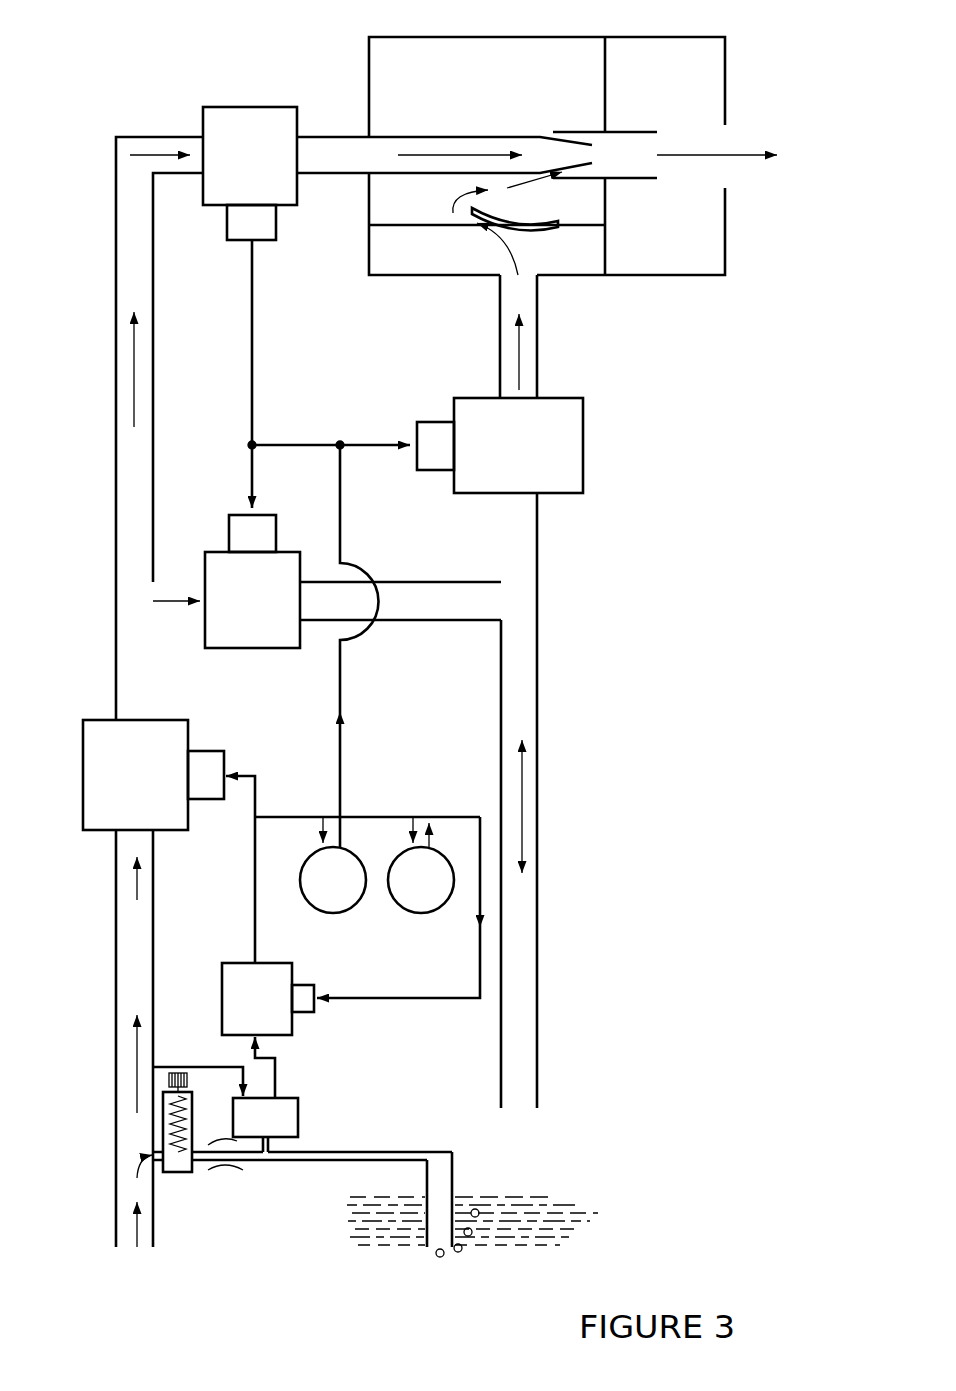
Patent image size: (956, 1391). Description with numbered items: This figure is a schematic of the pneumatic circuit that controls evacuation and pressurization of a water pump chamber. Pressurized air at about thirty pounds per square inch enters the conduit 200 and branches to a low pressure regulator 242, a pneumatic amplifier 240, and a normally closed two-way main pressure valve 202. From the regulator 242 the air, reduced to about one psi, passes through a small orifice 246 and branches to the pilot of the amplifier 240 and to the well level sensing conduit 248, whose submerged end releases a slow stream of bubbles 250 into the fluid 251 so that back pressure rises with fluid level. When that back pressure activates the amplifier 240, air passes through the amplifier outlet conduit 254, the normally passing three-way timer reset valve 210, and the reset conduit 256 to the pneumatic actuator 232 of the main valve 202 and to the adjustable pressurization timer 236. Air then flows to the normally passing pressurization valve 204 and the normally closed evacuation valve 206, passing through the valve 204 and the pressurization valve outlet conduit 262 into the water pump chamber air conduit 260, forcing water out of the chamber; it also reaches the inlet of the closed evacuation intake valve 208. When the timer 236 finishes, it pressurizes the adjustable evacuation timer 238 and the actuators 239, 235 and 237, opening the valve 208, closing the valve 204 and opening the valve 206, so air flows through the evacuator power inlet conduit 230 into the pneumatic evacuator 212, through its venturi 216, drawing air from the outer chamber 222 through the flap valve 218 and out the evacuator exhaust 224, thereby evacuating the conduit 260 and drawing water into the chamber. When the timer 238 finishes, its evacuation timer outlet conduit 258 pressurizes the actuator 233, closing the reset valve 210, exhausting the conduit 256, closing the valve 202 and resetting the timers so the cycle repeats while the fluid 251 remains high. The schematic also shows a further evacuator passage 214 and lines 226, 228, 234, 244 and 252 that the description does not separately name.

The conduit 200 is at (115, 1178).
The main pressure pneumatic valve 202 is at (135, 775).
The pressurization valve 204 is at (226, 600).
The evacuation valve 206 is at (250, 156).
The evacuation intake valve 208 is at (518, 445).
The timer reset valve 210 is at (257, 999).
The pneumatic evacuator 212 is at (458, 35).
The nozzle inlet passage 214 is at (407, 133).
The venturi 216 is at (598, 152).
The flap valve 218 is at (526, 212).
The outer chamber 222 is at (487, 249).
The evacuator exhaust 224 is at (723, 152).
The return conduit 226 is at (541, 333).
The supply conduit 228 is at (115, 399).
The evacuator power inlet conduit 230 is at (342, 136).
The pneumatic actuator 232 is at (205, 751).
The pneumatic actuator 233 is at (300, 983).
The control lines 234 is at (289, 442).
The pneumatic actuator 235 is at (276, 533).
The adjustable pressurization timer 236 is at (333, 880).
The pneumatic actuator 237 is at (279, 230).
The adjustable evacuation timer 238 is at (421, 880).
The pneumatic actuator 239 is at (445, 418).
The pneumatic amplifier 240 is at (265, 1125).
The low pressure regulator 242 is at (178, 1176).
The air line 244 is at (204, 1143).
The orifice 246 is at (223, 1174).
The well level sensing conduit 248 is at (457, 1192).
The bubbles 250 is at (468, 1252).
The fluid 251 is at (564, 1203).
The control line 252 is at (242, 1062).
The amplifier outlet conduit 254 is at (278, 1077).
The reset conduit 256 is at (253, 925).
The evacuation timer outlet conduit 258 is at (387, 993).
The water pump chamber air conduit 260 is at (541, 952).
The pressurization valve outlet conduit 262 is at (480, 578).